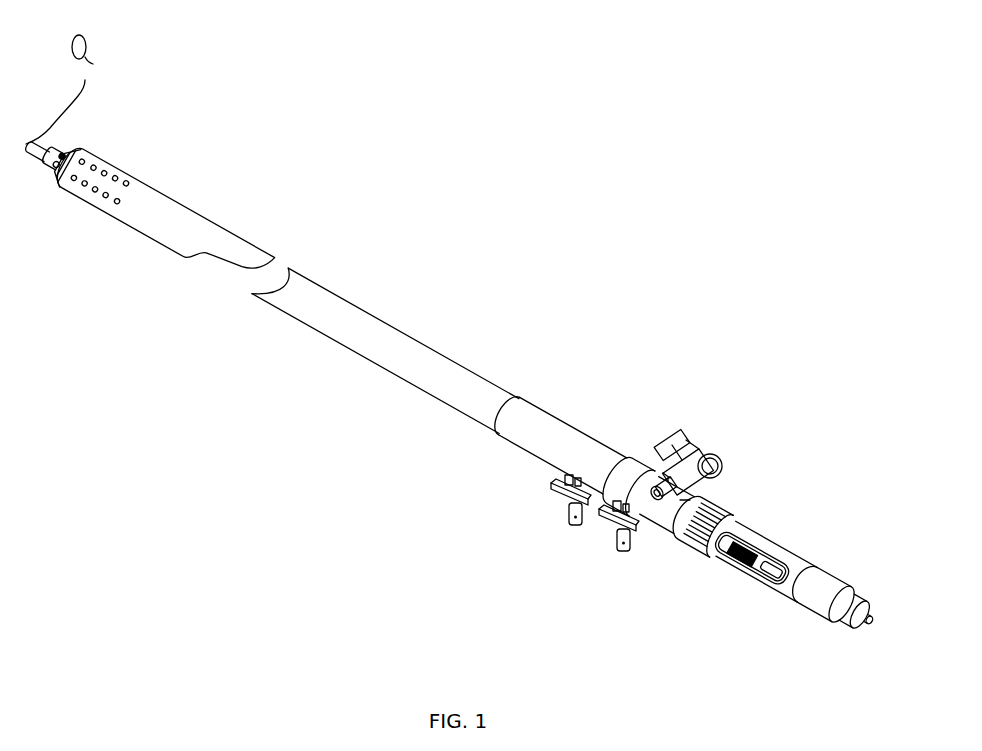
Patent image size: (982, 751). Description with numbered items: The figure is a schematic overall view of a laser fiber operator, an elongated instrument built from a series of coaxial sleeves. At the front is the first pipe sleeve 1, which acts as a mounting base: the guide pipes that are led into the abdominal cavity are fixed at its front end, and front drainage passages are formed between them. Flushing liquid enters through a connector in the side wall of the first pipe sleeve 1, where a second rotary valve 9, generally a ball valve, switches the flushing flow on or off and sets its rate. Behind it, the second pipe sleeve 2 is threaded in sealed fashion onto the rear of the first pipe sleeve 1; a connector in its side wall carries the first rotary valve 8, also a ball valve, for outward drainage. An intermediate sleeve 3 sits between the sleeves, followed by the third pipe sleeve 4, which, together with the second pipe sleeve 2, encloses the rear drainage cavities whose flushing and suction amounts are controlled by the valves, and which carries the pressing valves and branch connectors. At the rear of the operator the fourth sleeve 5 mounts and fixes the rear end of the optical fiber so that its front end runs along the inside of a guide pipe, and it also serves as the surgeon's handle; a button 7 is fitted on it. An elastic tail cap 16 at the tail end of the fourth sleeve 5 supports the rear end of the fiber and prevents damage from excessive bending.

The first pipe sleeve 1 is at (390, 329).
The second pipe sleeve 2 is at (538, 412).
The intermediate sleeve 3 is at (628, 464).
The third pipe sleeve 4 is at (692, 465).
The fourth sleeve 5 is at (752, 539).
The button 7 is at (750, 570).
The first rotary valve 8 is at (627, 548).
The second rotary valve 9 is at (577, 512).
The tail cap 16 is at (820, 612).